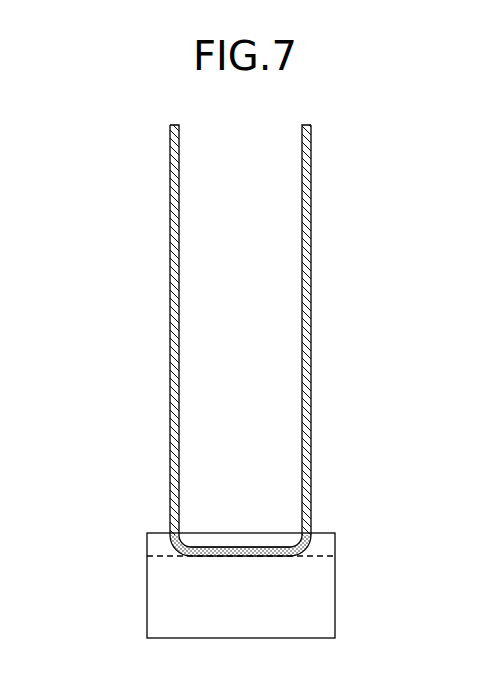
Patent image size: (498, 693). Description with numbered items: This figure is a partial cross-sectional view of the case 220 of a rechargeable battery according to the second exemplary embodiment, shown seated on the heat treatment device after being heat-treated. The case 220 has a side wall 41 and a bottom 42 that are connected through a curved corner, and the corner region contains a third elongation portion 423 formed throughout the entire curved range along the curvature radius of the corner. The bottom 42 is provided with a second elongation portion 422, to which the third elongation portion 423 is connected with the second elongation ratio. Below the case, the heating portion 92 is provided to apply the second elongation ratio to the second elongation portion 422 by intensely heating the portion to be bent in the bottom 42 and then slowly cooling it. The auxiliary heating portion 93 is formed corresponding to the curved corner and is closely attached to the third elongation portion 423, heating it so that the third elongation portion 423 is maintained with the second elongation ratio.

The case 220 is at (297, 340).
The side wall 41 is at (304, 299).
The bottom 42 is at (297, 512).
The second elongation portion 422 is at (242, 543).
The third elongation portion 423 is at (301, 542).
The auxiliary heating portion 93 is at (160, 545).
The heating portion 92 is at (160, 596).